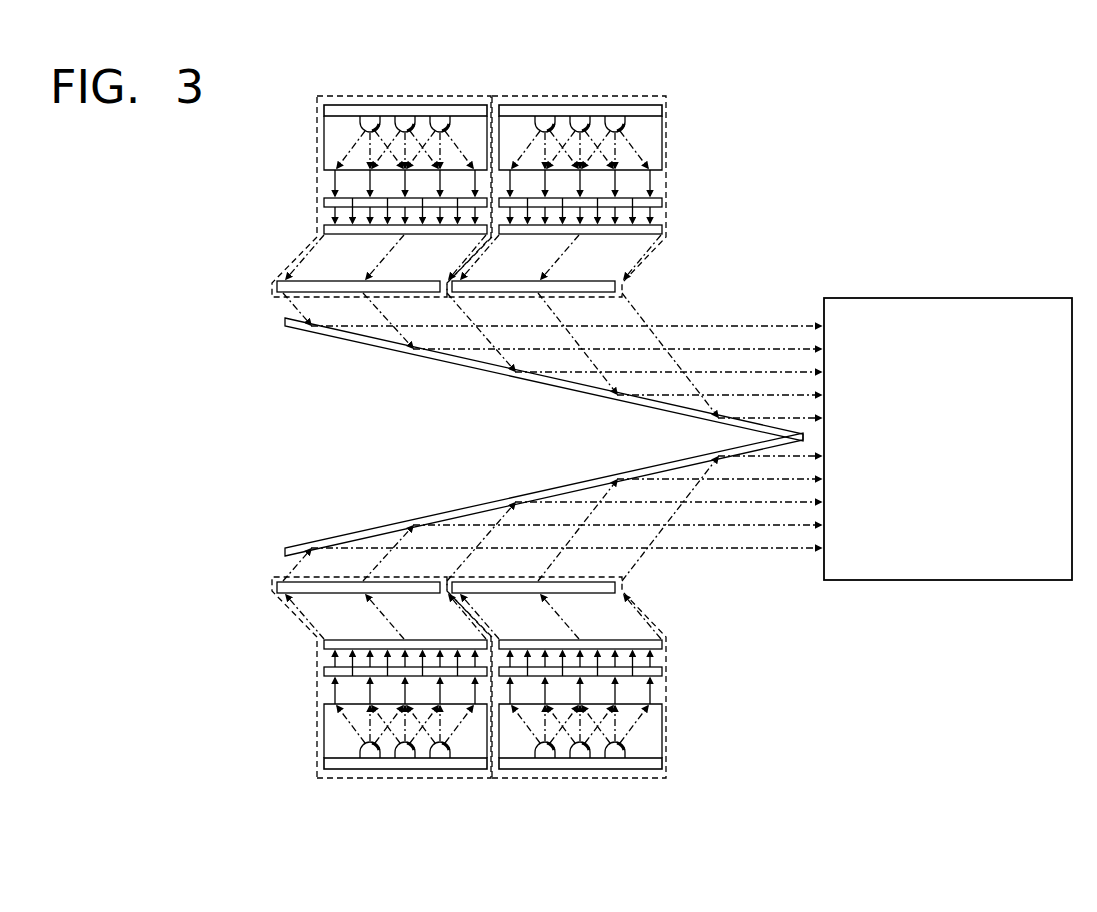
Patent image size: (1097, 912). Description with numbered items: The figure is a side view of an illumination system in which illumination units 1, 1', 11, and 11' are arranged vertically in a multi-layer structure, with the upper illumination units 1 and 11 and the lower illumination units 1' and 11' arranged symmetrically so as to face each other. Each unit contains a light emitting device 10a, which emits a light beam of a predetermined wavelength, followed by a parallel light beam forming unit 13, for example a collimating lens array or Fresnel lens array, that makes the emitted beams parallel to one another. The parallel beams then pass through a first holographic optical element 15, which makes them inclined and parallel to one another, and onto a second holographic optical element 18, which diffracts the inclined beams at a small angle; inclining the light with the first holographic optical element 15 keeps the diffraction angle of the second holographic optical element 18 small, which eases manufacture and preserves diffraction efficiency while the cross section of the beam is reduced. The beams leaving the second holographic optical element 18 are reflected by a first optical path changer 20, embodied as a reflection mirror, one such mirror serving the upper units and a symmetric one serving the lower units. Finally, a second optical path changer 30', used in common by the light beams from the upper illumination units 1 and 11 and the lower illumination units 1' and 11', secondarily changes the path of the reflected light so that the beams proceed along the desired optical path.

The illumination unit 1 is at (381, 170).
The illumination unit 11 is at (556, 170).
The illumination unit 1' is at (381, 705).
The illumination unit 11' is at (556, 705).
The light emitting device 10a is at (447, 110).
The parallel light beam forming unit 13 is at (323, 203).
The first holographic optical element 15 is at (323, 231).
The second holographic optical element 18 is at (276, 287).
The first optical path changer 20 is at (286, 322).
The second optical path changer 30' is at (948, 408).